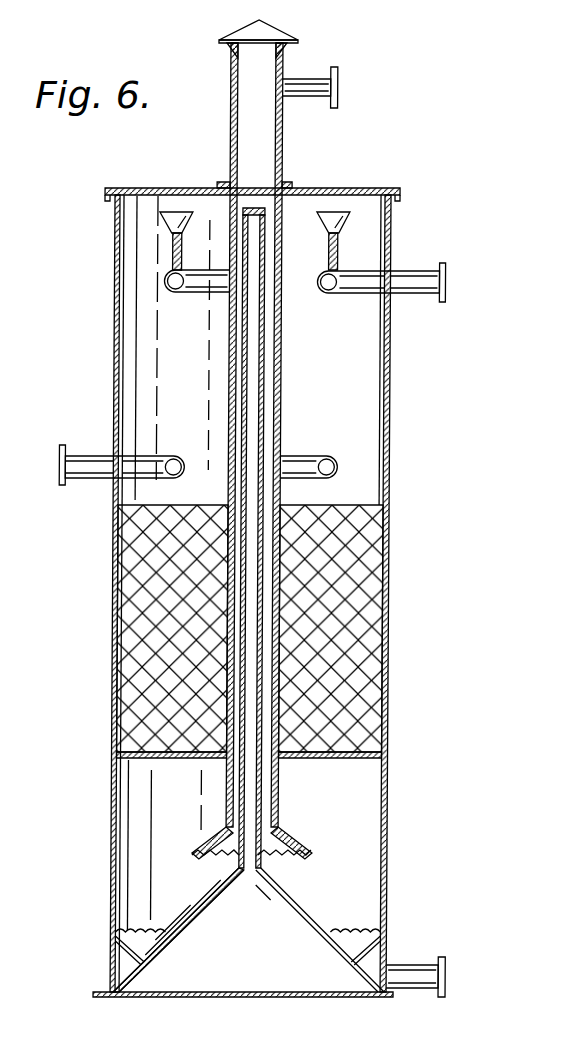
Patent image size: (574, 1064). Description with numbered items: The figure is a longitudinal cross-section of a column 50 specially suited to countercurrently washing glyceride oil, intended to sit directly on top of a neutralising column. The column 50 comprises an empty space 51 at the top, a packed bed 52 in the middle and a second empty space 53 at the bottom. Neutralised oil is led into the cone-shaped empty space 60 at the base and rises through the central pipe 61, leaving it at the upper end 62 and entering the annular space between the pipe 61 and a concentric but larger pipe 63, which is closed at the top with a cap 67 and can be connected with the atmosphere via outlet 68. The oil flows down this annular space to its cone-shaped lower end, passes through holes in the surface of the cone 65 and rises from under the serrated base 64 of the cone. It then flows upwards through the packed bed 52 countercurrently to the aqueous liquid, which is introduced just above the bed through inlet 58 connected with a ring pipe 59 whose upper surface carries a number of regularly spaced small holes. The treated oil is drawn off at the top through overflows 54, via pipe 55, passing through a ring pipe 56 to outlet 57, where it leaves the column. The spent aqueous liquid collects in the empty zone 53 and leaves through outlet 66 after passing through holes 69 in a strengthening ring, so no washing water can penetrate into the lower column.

The column 50 is at (115, 390).
The empty space 51 is at (360, 398).
The packed bed 52 is at (372, 594).
The second empty space 53 is at (360, 822).
The overflows 54 is at (172, 218).
The pipe 55 is at (172, 252).
The ring pipe 56 is at (165, 282).
The outlet 57 is at (410, 295).
The inlet 58 is at (78, 458).
The ring pipe 59 is at (338, 472).
The cone-shaped empty space 60 is at (148, 983).
The central pipe 61 is at (250, 788).
The upper end 62 is at (258, 207).
The concentric pipe 63 is at (230, 315).
The base of the cone 64 is at (240, 866).
The cone 65 is at (295, 850).
The outlet 66 is at (424, 975).
The cap 67 is at (290, 34).
The outlet 68 is at (337, 88).
The holes 69 is at (135, 930).